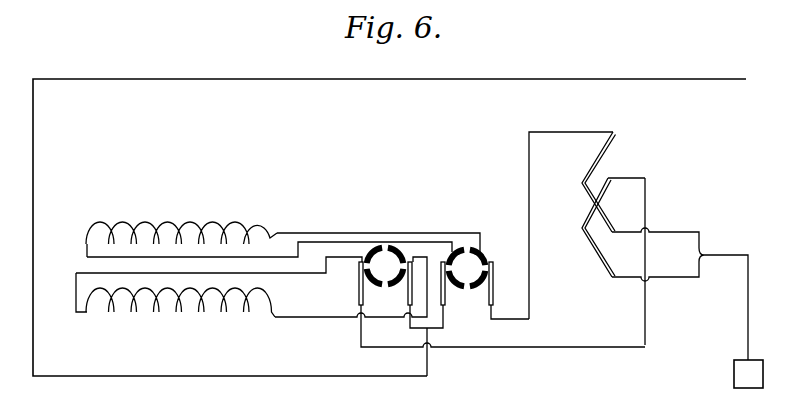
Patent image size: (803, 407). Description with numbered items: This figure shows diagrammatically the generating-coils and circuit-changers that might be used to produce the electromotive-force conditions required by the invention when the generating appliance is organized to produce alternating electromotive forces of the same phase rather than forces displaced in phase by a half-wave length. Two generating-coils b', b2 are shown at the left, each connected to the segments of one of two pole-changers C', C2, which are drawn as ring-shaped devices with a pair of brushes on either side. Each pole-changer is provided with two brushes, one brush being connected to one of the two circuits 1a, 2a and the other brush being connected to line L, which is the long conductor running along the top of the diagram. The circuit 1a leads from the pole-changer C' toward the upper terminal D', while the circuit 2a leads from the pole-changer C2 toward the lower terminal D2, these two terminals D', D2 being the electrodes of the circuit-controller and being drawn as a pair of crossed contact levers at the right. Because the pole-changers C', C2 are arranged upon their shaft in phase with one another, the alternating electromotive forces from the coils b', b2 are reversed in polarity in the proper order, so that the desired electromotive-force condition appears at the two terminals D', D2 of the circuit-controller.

The line L is at (389, 216).
The generating-coil b' is at (181, 227).
The generating-coil b2 is at (175, 306).
The pole-changer C2 is at (502, 297).
The pole-changer C' is at (485, 284).
The circuit 1a is at (529, 297).
The circuit 2a is at (536, 277).
The terminal D' is at (612, 179).
The terminal D2 is at (608, 178).